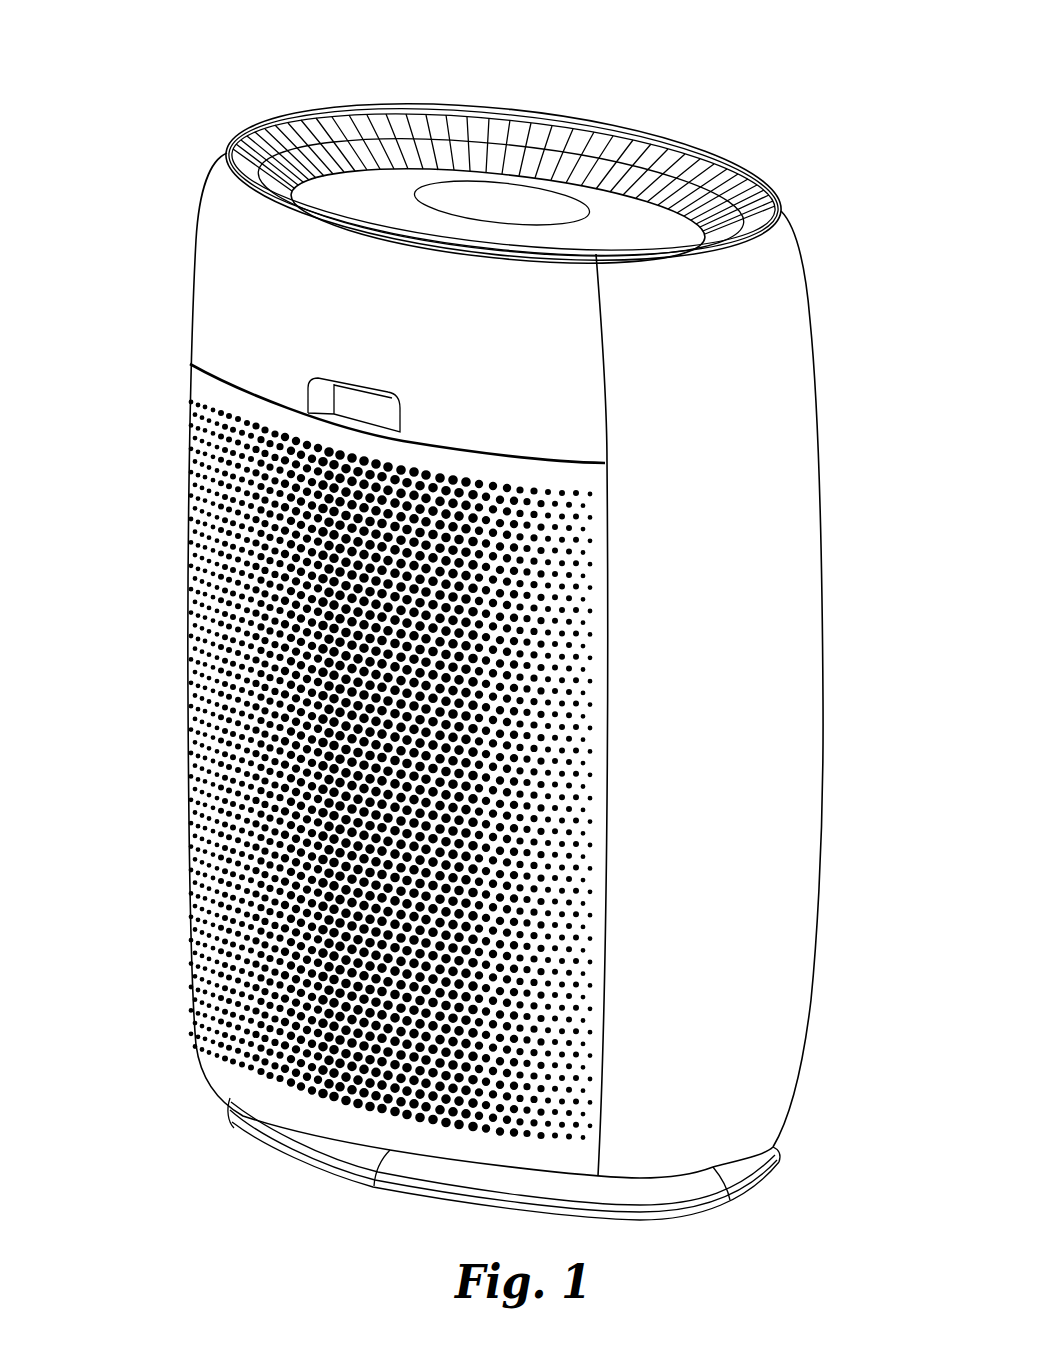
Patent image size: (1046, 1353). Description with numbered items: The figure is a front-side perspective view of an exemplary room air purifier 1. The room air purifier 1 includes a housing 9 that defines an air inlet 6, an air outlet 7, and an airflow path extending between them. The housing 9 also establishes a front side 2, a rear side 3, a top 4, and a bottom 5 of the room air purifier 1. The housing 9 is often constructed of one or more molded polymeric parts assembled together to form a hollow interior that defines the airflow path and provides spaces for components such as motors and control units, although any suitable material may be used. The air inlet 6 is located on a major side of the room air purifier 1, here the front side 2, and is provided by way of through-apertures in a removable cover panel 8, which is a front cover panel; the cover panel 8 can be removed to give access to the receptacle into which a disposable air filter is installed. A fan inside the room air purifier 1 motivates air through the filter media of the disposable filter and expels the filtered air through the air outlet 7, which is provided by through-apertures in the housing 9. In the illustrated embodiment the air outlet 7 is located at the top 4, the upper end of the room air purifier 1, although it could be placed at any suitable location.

The room air purifier 1 is at (745, 77).
The front side 2 is at (157, 542).
The rear side 3 is at (847, 527).
The top 4 is at (456, 95).
The bottom 5 is at (300, 1208).
The air inlet 6 is at (277, 762).
The air outlet 7 is at (553, 165).
The removable cover panel 8 is at (207, 847).
The housing 9 is at (805, 357).